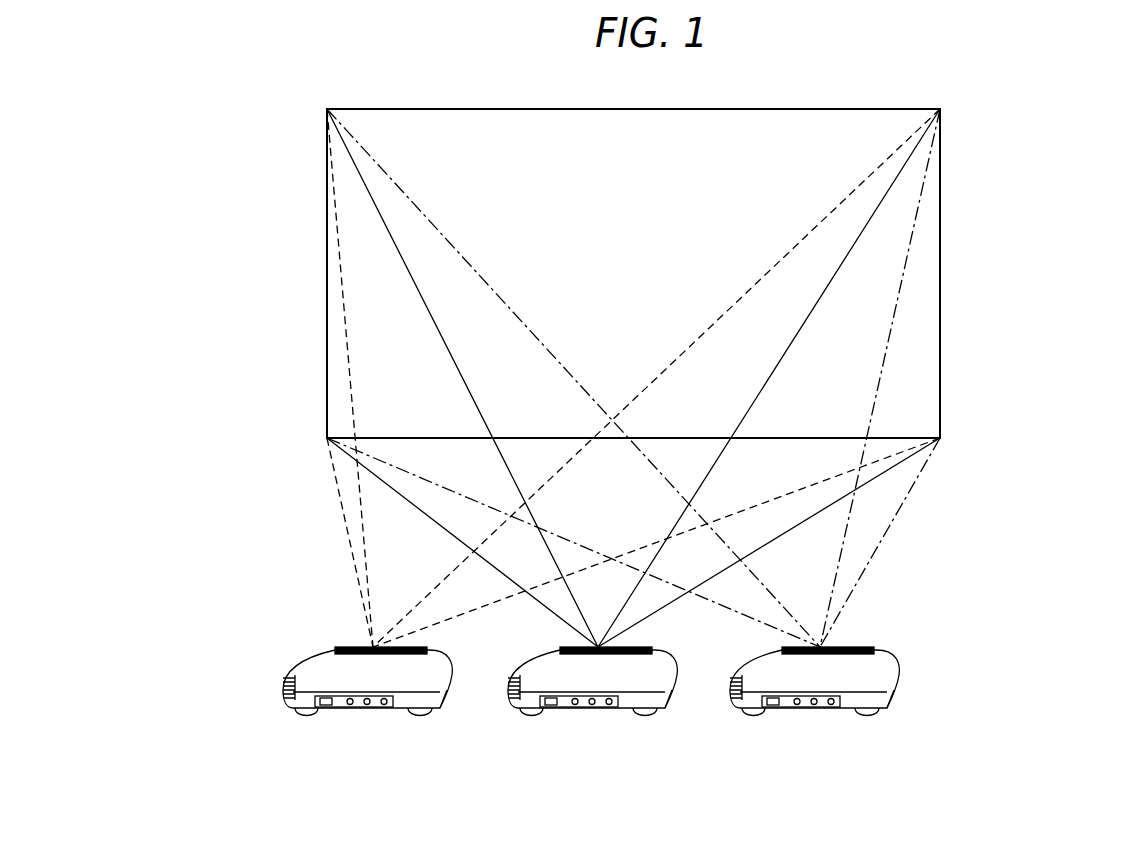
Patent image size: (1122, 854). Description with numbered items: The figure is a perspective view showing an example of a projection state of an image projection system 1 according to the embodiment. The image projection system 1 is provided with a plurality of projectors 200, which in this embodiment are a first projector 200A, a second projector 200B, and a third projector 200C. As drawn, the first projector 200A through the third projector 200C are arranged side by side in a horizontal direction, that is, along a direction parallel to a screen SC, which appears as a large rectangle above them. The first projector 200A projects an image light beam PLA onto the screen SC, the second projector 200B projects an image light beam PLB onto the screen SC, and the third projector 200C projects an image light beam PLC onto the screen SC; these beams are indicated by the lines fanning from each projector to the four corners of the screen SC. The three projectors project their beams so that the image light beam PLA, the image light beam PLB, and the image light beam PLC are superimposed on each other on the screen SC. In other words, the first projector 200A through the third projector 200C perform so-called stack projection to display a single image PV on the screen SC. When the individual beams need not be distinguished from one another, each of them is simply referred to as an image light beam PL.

The image projection system 1 is at (1047, 122).
The screen SC is at (942, 287).
The image PV is at (565, 125).
The image light beam PL is at (607, 378).
The image light beam PLA is at (360, 590).
The image light beam PLB is at (638, 622).
The image light beam PLC is at (852, 593).
The projectors 200 is at (591, 713).
The first projector 200A is at (348, 717).
The second projector 200B is at (575, 713).
The third projector 200C is at (800, 713).